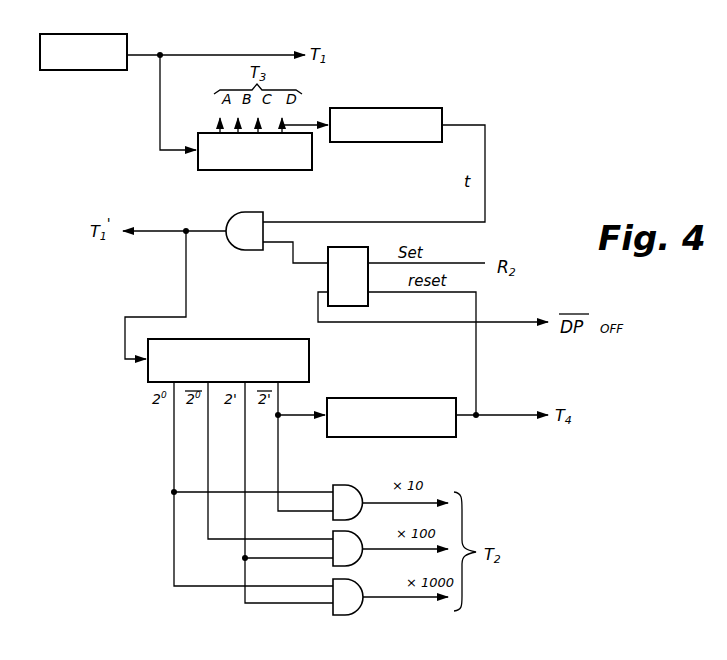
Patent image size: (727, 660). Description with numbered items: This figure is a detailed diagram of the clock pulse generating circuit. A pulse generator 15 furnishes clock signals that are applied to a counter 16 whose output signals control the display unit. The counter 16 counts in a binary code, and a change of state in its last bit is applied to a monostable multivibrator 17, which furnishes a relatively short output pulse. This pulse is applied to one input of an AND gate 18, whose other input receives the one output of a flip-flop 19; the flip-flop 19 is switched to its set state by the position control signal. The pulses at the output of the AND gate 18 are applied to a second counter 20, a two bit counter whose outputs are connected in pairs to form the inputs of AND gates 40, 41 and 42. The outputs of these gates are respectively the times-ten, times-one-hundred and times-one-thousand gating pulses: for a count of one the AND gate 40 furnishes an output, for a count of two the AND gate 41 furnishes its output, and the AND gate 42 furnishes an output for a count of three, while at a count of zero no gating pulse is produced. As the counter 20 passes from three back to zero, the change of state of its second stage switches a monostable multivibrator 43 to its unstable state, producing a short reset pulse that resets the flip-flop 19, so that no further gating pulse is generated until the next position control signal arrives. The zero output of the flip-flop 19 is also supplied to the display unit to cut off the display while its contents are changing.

The pulse generator 15 is at (114, 30).
The counter 16 is at (244, 178).
The monostable multivibrator 17 is at (408, 102).
The AND gate 18 is at (254, 238).
The flip-flop 19 is at (327, 273).
The second counter 20 is at (236, 336).
The monostable multivibrator 43 is at (382, 390).
The AND gate 40 is at (356, 500).
The AND gate 41 is at (346, 550).
The AND gate 42 is at (346, 598).